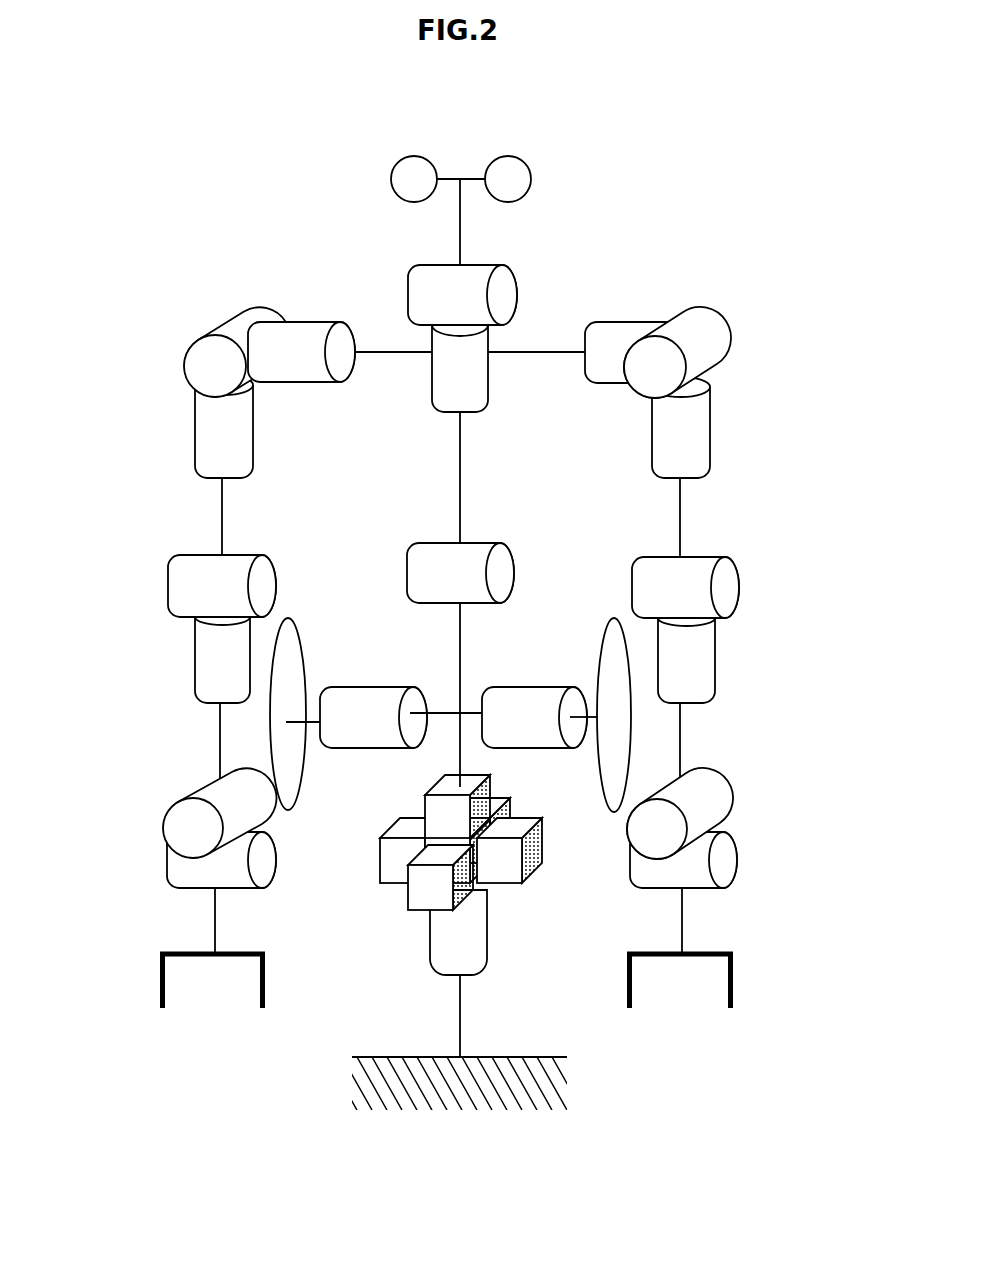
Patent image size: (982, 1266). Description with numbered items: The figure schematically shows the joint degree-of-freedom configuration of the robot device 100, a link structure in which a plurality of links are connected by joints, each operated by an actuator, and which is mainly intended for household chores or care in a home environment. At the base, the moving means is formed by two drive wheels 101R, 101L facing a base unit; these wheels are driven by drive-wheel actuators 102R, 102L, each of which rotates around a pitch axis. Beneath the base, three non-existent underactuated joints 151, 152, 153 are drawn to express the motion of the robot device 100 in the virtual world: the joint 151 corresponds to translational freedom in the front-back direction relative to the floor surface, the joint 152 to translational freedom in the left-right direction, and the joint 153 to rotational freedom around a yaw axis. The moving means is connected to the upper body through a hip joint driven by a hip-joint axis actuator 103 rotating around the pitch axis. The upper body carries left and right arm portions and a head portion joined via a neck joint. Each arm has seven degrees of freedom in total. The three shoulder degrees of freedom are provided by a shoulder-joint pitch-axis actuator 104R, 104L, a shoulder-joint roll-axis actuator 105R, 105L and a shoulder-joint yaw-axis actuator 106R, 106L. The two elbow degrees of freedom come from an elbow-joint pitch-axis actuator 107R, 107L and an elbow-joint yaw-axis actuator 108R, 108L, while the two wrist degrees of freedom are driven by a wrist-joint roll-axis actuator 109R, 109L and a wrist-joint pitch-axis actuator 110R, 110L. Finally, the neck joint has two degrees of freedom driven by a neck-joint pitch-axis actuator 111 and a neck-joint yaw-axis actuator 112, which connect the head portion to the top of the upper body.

The robot device 100 is at (456, 697).
The drive wheel 101R is at (293, 645).
The drive wheel 101L is at (610, 640).
The drive-wheel actuator 102R is at (360, 697).
The drive-wheel actuator 102L is at (527, 697).
The hip-joint axis actuator 103 is at (480, 552).
The shoulder-joint pitch-axis actuator 104R is at (295, 330).
The shoulder-joint pitch-axis actuator 104L is at (607, 327).
The shoulder-joint roll-axis actuator 105R is at (235, 330).
The shoulder-joint roll-axis actuator 105L is at (717, 330).
The shoulder-joint yaw-axis actuator 106R is at (202, 422).
The shoulder-joint yaw-axis actuator 106L is at (700, 430).
The elbow-joint pitch-axis actuator 107R is at (178, 590).
The elbow-joint pitch-axis actuator 107L is at (730, 582).
The elbow-joint yaw-axis actuator 108R is at (200, 657).
The elbow-joint yaw-axis actuator 108L is at (707, 667).
The wrist-joint roll-axis actuator 109R is at (172, 802).
The wrist-joint roll-axis actuator 109L is at (727, 802).
The wrist-joint pitch-axis actuator 110R is at (173, 868).
The wrist-joint pitch-axis actuator 110L is at (728, 855).
The neck-joint pitch-axis actuator 111 is at (490, 262).
The neck-joint yaw-axis actuator 112 is at (478, 392).
The underactuated joint 151 is at (420, 897).
The underactuated joint 152 is at (547, 857).
The underactuated joint 153 is at (480, 940).